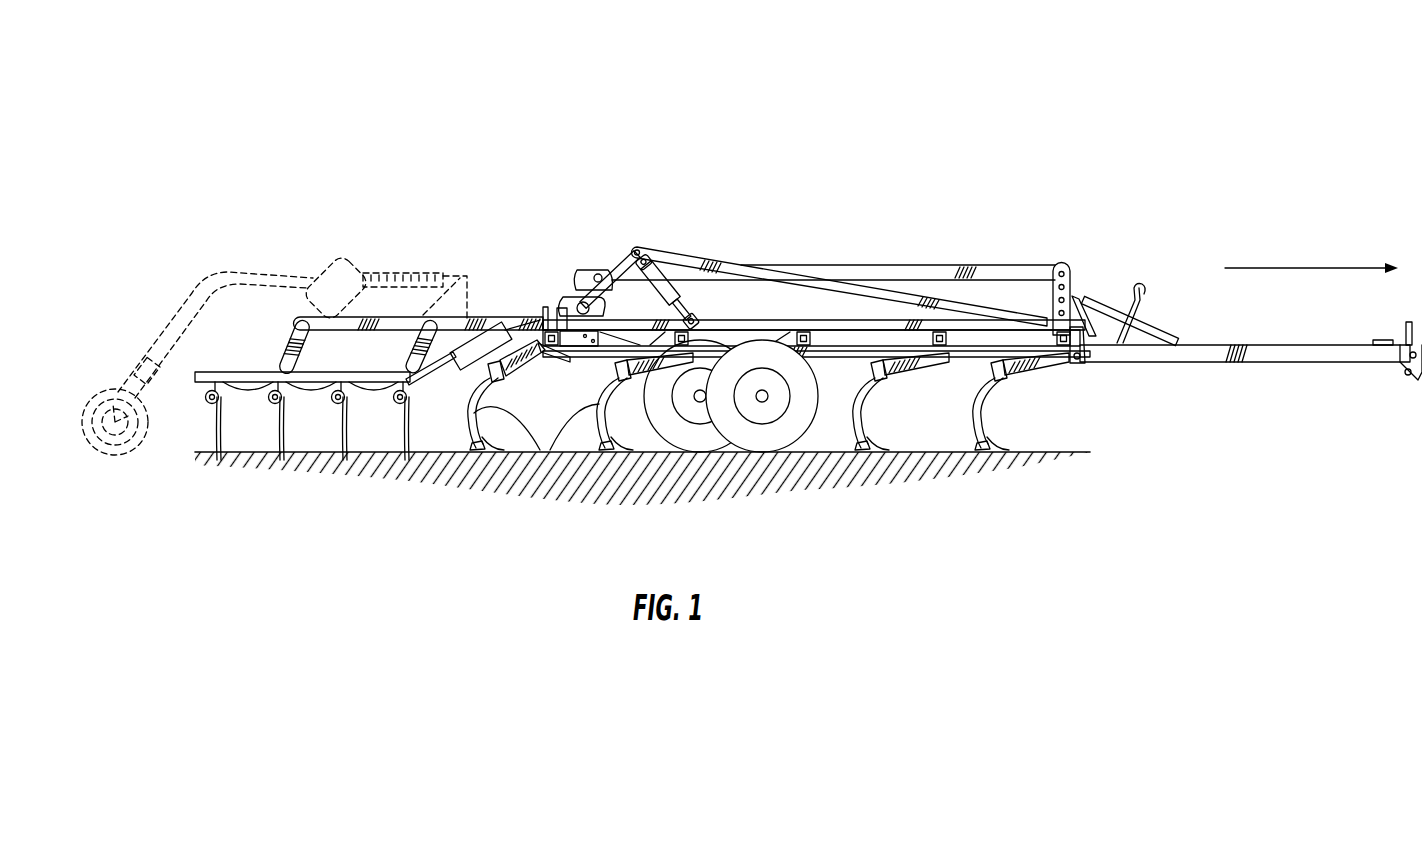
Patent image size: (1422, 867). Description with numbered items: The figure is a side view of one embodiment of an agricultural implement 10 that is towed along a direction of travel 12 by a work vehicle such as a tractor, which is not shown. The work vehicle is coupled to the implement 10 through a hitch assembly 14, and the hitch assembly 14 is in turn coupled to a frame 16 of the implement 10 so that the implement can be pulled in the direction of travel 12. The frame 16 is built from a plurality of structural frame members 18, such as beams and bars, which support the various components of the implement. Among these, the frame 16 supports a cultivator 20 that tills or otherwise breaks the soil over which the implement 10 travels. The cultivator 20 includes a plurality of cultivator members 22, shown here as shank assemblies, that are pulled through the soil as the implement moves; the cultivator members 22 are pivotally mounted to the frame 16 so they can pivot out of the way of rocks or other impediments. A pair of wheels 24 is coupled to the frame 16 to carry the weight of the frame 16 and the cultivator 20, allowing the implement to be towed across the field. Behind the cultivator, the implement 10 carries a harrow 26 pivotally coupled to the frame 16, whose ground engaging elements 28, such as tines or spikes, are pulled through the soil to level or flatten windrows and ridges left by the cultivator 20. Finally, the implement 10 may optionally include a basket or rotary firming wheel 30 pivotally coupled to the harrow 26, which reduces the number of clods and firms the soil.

The agricultural implement 10 is at (249, 147).
The direction of travel 12 is at (1312, 268).
The hitch assembly 14 is at (1305, 355).
The frame 16 is at (1005, 250).
The structural frame members 18 is at (700, 338).
The cultivator 20 is at (1093, 428).
The cultivator members 22 is at (533, 447).
The wheels 24 is at (733, 428).
The harrow 26 is at (483, 258).
The ground engaging elements 28 is at (218, 457).
The basket or rotary firming wheel 30 is at (197, 270).